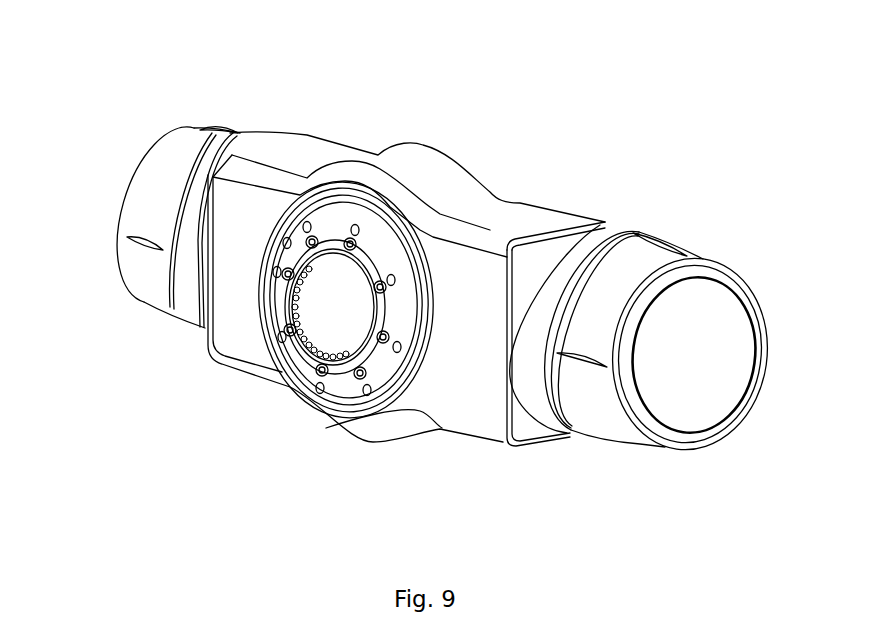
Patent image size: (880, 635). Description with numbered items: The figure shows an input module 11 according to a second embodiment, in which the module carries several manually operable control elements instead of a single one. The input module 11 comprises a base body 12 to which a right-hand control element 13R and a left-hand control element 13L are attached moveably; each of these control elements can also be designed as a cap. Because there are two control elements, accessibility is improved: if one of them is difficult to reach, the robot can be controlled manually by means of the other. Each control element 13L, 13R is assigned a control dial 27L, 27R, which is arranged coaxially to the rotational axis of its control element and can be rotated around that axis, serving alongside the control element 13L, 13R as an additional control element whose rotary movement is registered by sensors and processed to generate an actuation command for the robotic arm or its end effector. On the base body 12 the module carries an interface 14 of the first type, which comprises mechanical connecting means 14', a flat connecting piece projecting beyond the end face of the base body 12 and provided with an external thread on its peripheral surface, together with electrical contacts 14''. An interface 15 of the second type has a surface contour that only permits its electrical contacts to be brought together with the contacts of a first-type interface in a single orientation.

The input module 11 is at (452, 130).
The base body 12 is at (457, 398).
The left-hand control element 13L is at (163, 180).
The right-hand control element 13R is at (706, 322).
The interface 14 is at (323, 348).
The mechanical connecting means 14' is at (278, 328).
The electrical contacts 14'' is at (333, 392).
The interface of the second type 15 is at (525, 185).
The left control dial 27L is at (197, 270).
The right control dial 27R is at (535, 408).